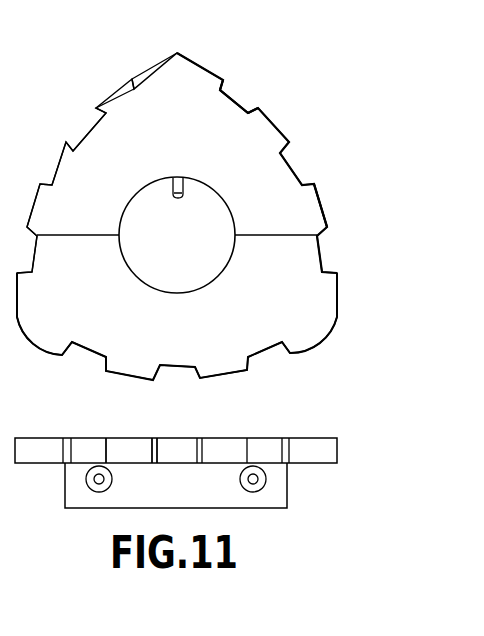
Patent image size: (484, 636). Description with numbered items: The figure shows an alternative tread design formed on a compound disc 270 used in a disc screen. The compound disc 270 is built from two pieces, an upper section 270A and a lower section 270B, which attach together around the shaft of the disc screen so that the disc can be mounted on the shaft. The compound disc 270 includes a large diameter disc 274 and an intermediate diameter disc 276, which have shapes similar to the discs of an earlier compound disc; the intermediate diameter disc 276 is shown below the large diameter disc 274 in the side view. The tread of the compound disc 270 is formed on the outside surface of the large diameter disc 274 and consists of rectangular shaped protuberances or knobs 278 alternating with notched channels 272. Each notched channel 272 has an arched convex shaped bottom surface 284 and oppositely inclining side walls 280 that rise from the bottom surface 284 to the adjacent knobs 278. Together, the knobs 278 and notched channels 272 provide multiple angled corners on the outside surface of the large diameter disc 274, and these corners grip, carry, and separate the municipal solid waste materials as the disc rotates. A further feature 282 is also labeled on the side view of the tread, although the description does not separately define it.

The compound disc 270 is at (72, 90).
The upper section 270A is at (62, 167).
The lower section 270B is at (83, 353).
The notched channels 272 is at (282, 82).
The large diameter disc 274 is at (337, 452).
The intermediate diameter disc 276 is at (290, 485).
The knobs 278 is at (320, 203).
The side walls 280 is at (224, 80).
The recessed segment 282 is at (175, 452).
The bottom surface 284 is at (237, 100).